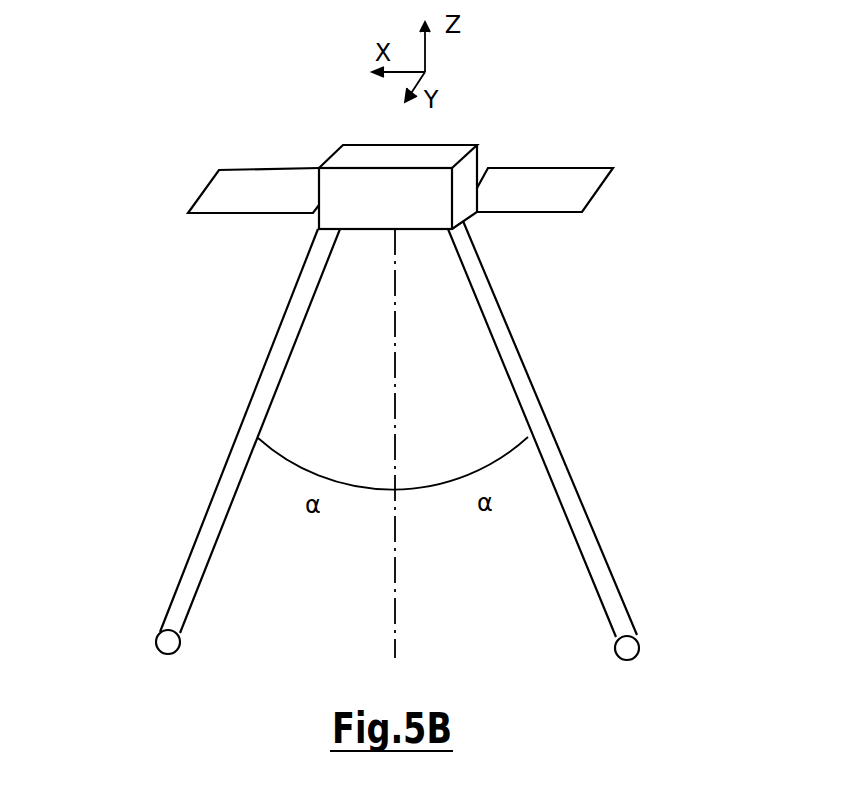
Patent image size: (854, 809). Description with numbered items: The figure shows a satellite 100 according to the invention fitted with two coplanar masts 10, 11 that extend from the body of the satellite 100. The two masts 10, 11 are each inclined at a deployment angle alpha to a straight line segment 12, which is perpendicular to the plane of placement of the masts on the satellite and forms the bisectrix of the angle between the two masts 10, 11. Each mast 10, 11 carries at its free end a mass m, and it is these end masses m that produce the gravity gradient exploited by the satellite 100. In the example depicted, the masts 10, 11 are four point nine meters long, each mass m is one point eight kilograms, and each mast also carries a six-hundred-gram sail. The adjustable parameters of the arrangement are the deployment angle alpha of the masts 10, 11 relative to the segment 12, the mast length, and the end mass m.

The satellite 100 is at (345, 145).
The mast 10 is at (225, 493).
The mast 11 is at (572, 508).
The straight line segment 12 is at (395, 577).
The mass m is at (157, 634).